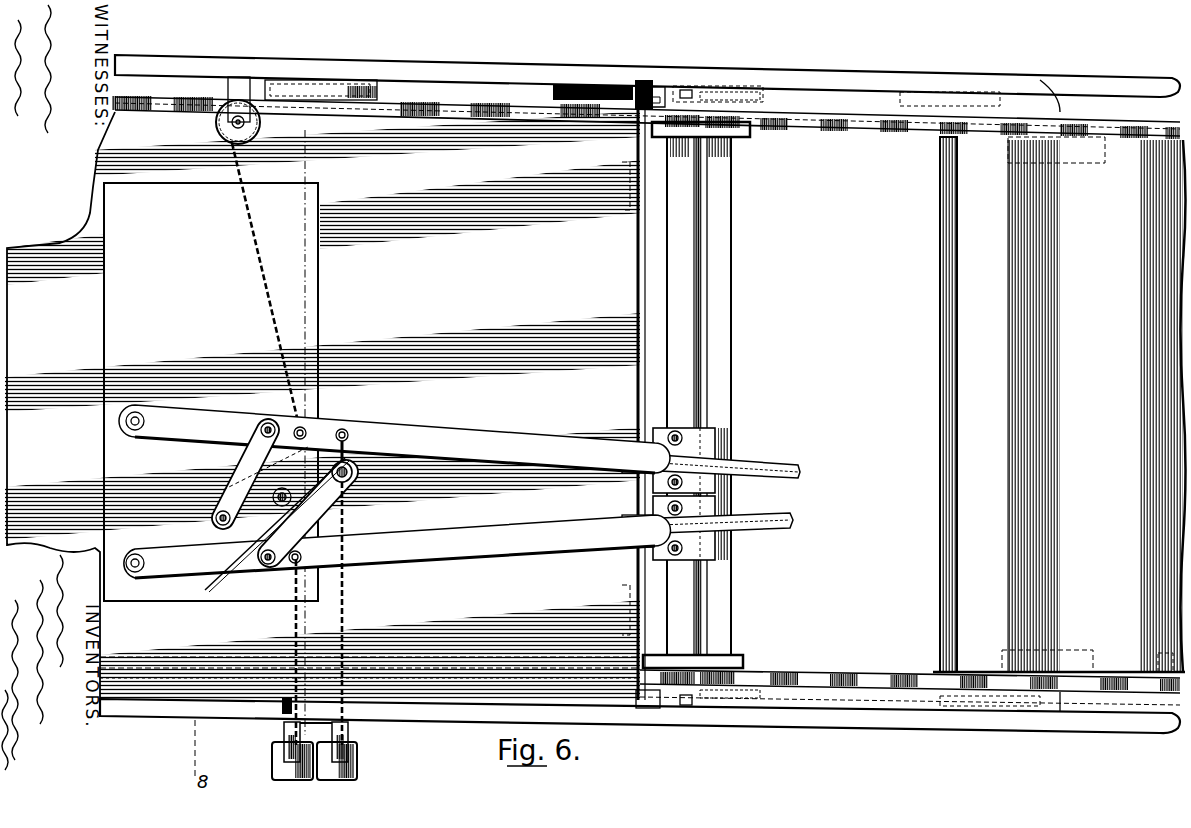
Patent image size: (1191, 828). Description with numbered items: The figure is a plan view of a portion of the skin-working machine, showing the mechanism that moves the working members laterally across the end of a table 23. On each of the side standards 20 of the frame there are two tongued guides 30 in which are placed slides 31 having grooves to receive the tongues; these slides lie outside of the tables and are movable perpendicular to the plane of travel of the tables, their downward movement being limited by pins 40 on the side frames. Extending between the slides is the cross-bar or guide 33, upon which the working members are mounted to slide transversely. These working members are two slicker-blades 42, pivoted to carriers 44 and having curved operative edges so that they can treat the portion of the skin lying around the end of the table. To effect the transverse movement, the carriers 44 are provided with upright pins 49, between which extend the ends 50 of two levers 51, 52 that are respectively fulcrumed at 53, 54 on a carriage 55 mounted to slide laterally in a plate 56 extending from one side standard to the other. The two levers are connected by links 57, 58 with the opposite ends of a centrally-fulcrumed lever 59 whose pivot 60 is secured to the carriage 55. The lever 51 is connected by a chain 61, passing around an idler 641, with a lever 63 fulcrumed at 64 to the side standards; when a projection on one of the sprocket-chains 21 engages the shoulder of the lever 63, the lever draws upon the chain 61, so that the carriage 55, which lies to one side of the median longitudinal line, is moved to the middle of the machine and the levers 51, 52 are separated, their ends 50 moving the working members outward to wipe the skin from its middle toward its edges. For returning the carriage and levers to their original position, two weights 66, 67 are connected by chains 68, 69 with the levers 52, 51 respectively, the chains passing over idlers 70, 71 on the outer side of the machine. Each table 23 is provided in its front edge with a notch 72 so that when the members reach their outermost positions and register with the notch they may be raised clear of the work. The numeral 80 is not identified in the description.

The side standard 20 is at (898, 76).
The sprocket-chain 21 is at (1064, 110).
The table 23 is at (940, 580).
The tongued guide 30 is at (655, 85).
The slide 31 is at (762, 95).
The cross-bar or guide 33 is at (722, 232).
The pin 40 is at (700, 70).
The slicker-blade 42 is at (640, 432).
The carrier 44 is at (705, 436).
The upright pin 49 is at (682, 434).
The lever end 50 is at (785, 460).
The lever 51 is at (474, 436).
The lever 52 is at (455, 560).
The fulcrum 53 is at (125, 420).
The fulcrum 54 is at (137, 575).
The carriage 55 is at (300, 415).
The plate 56 is at (322, 405).
The link 57 is at (242, 478).
The link 58 is at (330, 508).
The centrally-fulcrumed lever 59 is at (345, 440).
The pivot or fulcrum 60 is at (276, 532).
The chain or flexible connection 61 is at (245, 236).
The lever 63 is at (286, 83).
The fulcrum 64 is at (378, 50).
The idler 641 is at (258, 136).
The weight 66 is at (275, 769).
The weight 67 is at (358, 771).
The chain or flexible connection 68 is at (294, 626).
The chain or flexible connection 69 is at (346, 628).
The idler 70 is at (284, 745).
The idler 71 is at (350, 748).
The notch 72 is at (622, 228).
The rail slide 80 is at (1000, 108).